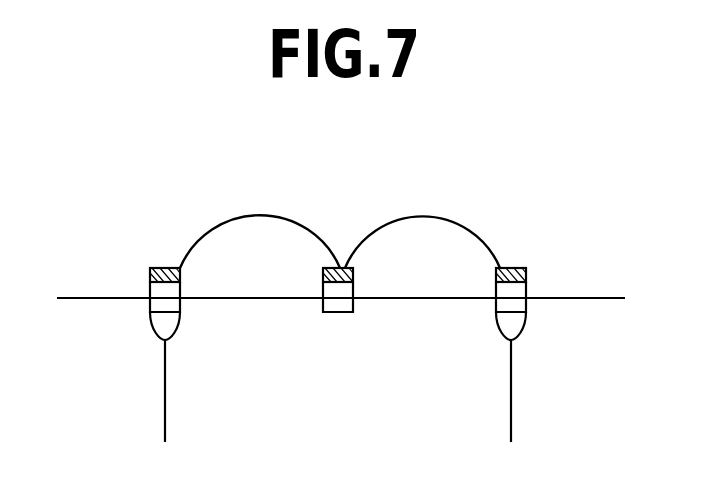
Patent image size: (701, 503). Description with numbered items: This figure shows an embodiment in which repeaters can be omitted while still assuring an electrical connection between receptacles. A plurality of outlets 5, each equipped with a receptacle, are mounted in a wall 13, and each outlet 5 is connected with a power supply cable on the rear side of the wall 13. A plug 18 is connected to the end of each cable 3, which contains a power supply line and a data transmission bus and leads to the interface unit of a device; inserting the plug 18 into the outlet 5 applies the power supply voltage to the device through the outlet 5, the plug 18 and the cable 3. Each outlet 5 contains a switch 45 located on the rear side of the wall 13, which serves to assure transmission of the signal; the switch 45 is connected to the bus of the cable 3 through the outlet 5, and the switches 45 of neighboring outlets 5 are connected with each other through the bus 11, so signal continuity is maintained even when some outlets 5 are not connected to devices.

The cable 3 is at (512, 412).
The outlet 5 is at (181, 305).
The bus 11 is at (377, 226).
The wall 13 is at (588, 298).
The plug 18 is at (503, 333).
The switch 45 is at (492, 271).